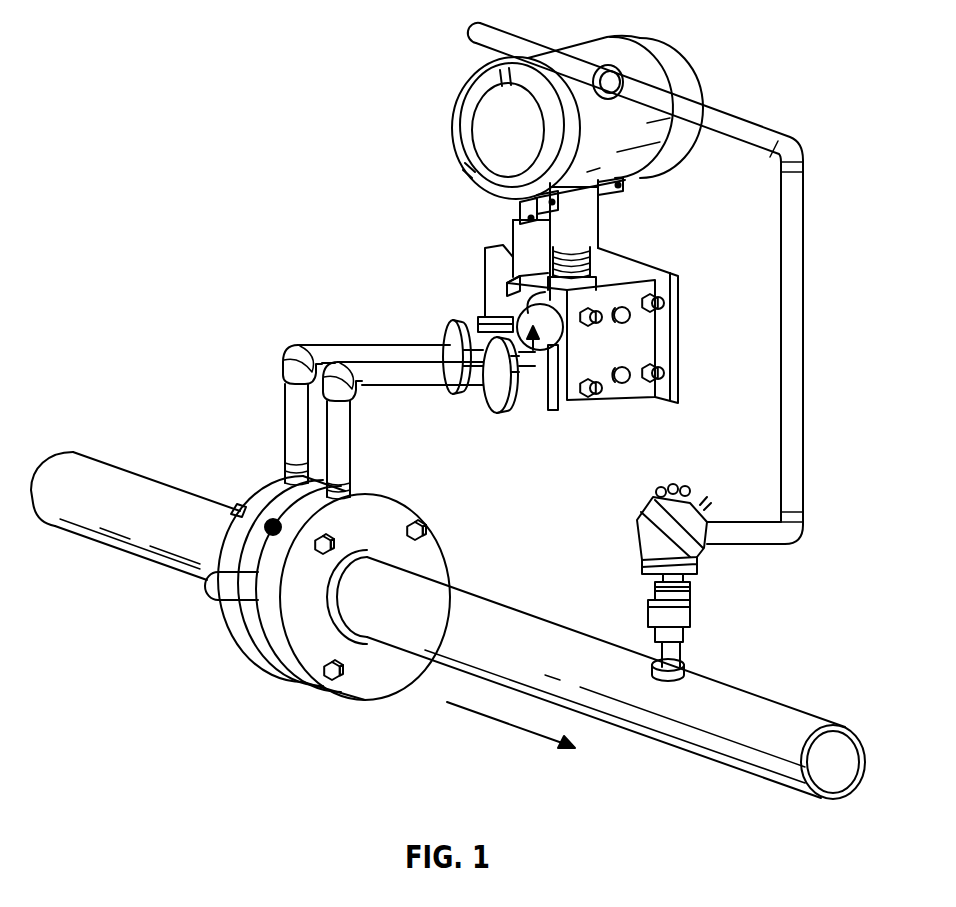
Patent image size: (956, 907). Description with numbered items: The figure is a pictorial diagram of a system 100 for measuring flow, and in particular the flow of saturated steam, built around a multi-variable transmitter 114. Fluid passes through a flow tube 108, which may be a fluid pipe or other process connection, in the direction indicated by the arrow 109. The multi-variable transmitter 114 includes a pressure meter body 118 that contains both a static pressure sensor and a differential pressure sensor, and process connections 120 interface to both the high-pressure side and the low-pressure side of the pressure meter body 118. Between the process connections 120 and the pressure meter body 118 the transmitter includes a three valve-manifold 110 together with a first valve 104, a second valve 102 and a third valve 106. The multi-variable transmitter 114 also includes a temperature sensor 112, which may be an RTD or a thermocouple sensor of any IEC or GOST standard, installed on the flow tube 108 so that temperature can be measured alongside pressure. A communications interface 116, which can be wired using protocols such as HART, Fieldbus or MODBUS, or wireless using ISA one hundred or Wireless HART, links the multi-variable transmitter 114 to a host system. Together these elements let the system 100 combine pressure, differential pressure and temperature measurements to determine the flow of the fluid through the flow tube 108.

The system for measuring flow 100 is at (150, 98).
The second valve 102 is at (482, 317).
The first valve 104 is at (474, 320).
The third valve 106 is at (552, 407).
The flow tube 108 is at (727, 745).
The arrow 109 is at (502, 725).
The three valve-manifold 110 is at (500, 412).
The temperature sensor 112 is at (634, 498).
The multi-variable transmitter 114 is at (655, 36).
The communications interface 116 is at (470, 35).
The pressure meter body 118 is at (570, 393).
The process connections 120 is at (270, 466).